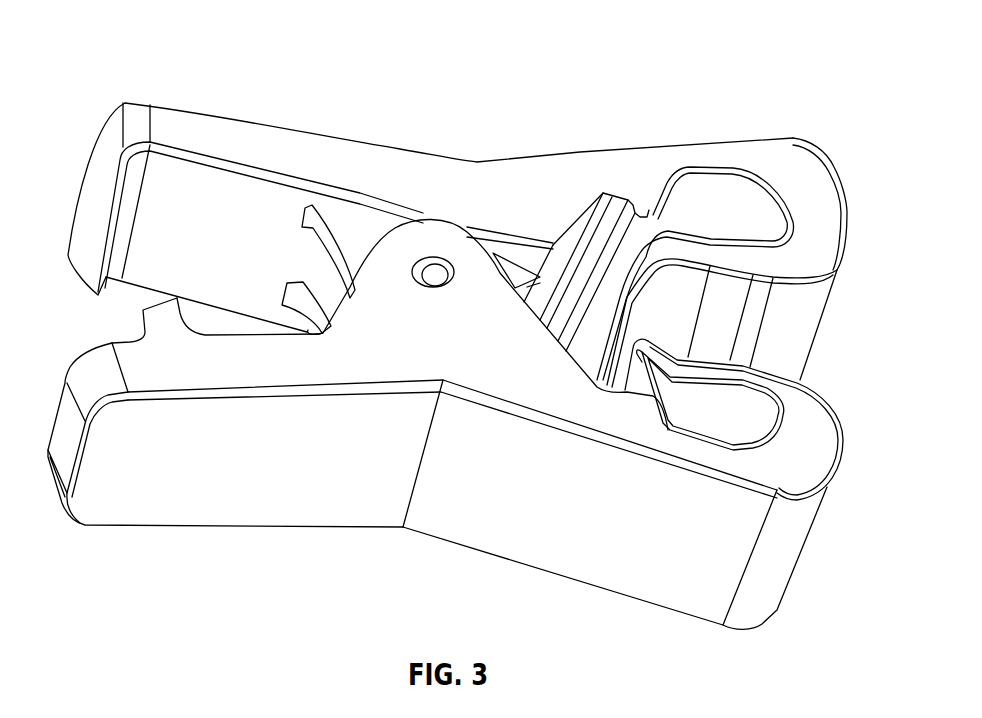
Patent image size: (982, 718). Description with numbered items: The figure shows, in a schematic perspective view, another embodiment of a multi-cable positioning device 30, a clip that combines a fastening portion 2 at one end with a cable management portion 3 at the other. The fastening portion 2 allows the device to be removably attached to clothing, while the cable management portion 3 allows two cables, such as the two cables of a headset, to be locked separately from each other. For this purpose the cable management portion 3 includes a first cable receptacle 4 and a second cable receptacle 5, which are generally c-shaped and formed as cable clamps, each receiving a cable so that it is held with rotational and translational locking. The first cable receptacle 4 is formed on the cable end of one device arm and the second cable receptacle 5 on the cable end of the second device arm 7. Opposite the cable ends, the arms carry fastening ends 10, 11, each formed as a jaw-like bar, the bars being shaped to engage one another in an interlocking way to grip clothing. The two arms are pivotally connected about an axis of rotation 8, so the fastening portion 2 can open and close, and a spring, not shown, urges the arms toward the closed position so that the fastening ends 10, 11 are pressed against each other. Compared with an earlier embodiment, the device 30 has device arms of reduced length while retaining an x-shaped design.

The multi-cable positioning device 30 is at (128, 44).
The fastening portion 2 is at (52, 316).
The cable management portion 3 is at (821, 357).
The first cable receptacle 4 is at (773, 207).
The second cable receptacle 5 is at (813, 450).
The second device arm 7 is at (362, 480).
The axis of rotation 8 is at (435, 270).
The fastening end 10 is at (173, 118).
The fastening end 11 is at (173, 378).